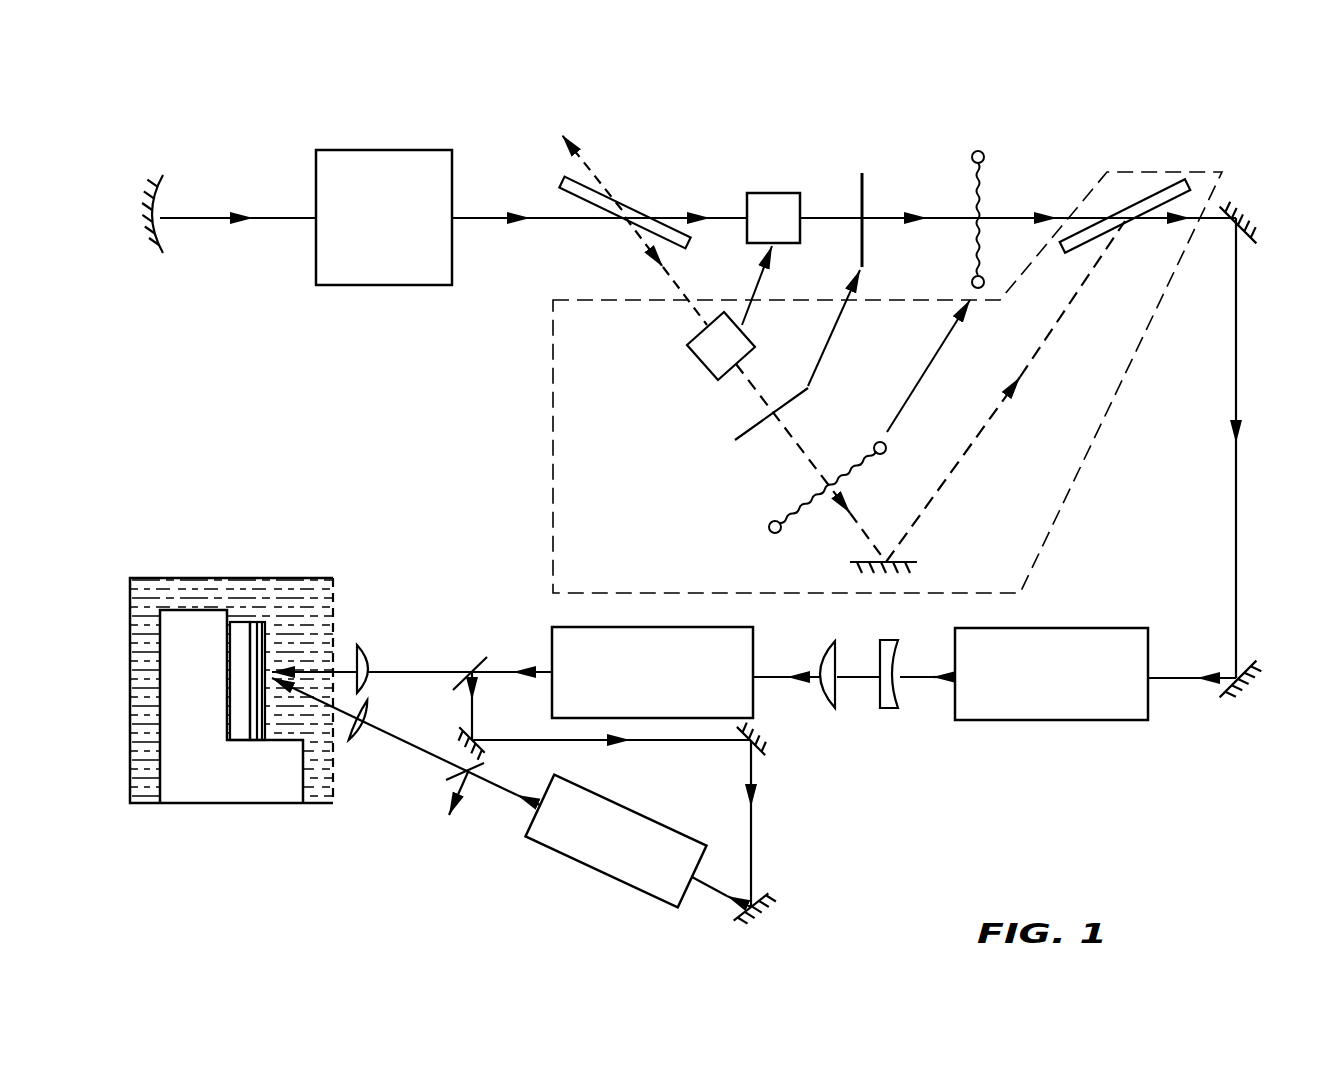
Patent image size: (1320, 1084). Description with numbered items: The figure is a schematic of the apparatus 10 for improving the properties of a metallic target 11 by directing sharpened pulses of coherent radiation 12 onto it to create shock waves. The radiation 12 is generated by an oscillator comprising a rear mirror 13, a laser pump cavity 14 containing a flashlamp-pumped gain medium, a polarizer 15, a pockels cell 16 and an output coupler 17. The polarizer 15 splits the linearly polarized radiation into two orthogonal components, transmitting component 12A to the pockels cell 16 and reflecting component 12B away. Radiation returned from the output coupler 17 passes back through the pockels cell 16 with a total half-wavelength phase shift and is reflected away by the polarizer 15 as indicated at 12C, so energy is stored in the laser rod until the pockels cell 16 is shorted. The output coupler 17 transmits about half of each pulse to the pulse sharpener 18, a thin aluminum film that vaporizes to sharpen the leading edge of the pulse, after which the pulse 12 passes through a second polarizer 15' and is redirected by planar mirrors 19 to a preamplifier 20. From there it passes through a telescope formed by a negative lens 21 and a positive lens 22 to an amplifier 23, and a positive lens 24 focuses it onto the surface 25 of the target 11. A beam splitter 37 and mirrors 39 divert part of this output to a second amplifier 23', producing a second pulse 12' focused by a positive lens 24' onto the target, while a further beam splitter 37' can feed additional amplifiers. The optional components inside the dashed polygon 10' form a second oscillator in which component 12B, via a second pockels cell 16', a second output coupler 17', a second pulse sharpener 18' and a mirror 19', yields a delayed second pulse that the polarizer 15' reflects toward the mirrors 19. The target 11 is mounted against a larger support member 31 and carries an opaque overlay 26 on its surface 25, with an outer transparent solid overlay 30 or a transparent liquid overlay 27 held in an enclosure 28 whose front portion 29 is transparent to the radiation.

The apparatus 10 is at (340, 64).
The dashed polygon 10' is at (837, 382).
The target 11 is at (285, 533).
The coherent radiation 12 is at (698, 562).
The second amplified radiation pulse 12' is at (698, 564).
The transmitted radiation component 12A is at (725, 215).
The reflected radiation component 12B is at (660, 265).
The reflected back radiation 12C is at (564, 138).
The rear mirror 13 is at (163, 200).
The laser pump cavity 14 is at (400, 150).
The polarizer 15 is at (594, 190).
The second polarizer 15' is at (1106, 219).
The pockels cell 16 is at (785, 187).
The second pockels cell 16' is at (744, 313).
The output coupler 17 is at (894, 188).
The second output coupler 17' is at (801, 355).
The pulse sharpener 18 is at (991, 195).
The second pulse sharpener 18' is at (869, 416).
The planar mirror 19 is at (1265, 452).
The second mirror 19' is at (913, 545).
The preamplifier 20 is at (1052, 628).
The negative lens 21 is at (893, 640).
The positive lens 22 is at (823, 647).
The amplifier 23 is at (652, 656).
The second amplifier 23' is at (616, 841).
The positive lens 24 is at (393, 652).
The second positive lens 24' is at (390, 713).
The target surface 25 is at (245, 712).
The overlay layer 26 is at (257, 622).
The liquid transparent overlay 27 is at (317, 632).
The enclosure 28 is at (140, 803).
The front portion 29 is at (333, 767).
The solid transparent overlay 30 is at (263, 622).
The support member 31 is at (212, 742).
The beam splitter 37 is at (493, 657).
The second beam splitter 37' is at (496, 764).
The mirrors 39 is at (475, 737).